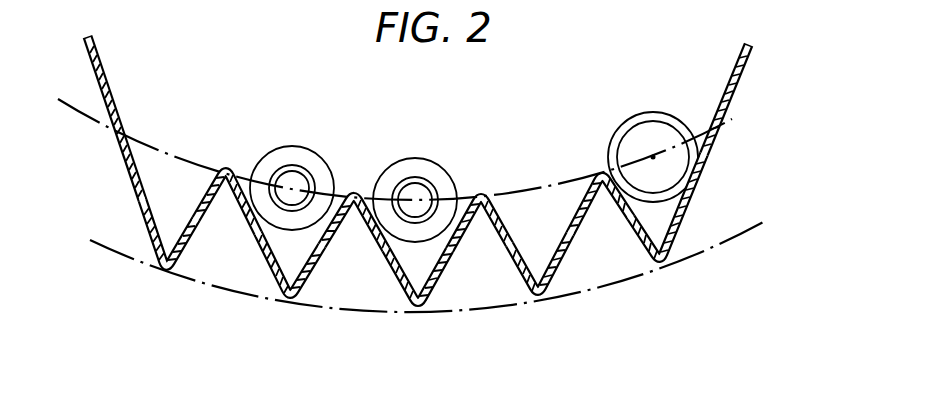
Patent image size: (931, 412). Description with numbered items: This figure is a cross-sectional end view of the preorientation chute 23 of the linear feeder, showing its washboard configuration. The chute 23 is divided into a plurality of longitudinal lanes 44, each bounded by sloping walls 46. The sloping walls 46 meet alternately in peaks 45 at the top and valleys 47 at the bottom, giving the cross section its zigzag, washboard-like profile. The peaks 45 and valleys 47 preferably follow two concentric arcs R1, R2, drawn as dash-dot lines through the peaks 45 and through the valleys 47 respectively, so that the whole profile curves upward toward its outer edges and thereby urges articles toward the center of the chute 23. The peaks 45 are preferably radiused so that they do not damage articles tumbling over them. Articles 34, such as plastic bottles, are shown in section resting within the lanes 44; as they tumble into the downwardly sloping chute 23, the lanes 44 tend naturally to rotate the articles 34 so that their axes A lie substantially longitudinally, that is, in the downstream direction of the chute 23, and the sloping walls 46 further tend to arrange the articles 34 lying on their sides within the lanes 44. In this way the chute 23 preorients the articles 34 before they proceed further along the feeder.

The preorientation chute 23 is at (109, 131).
The articles 34 is at (353, 170).
The longitudinal lanes 44 is at (395, 139).
The peaks 45 is at (413, 174).
The sloping walls 46 is at (449, 268).
The valleys 47 is at (231, 278).
The axes A is at (653, 130).
The concentric arc R1 is at (758, 108).
The concentric arc R2 is at (461, 249).